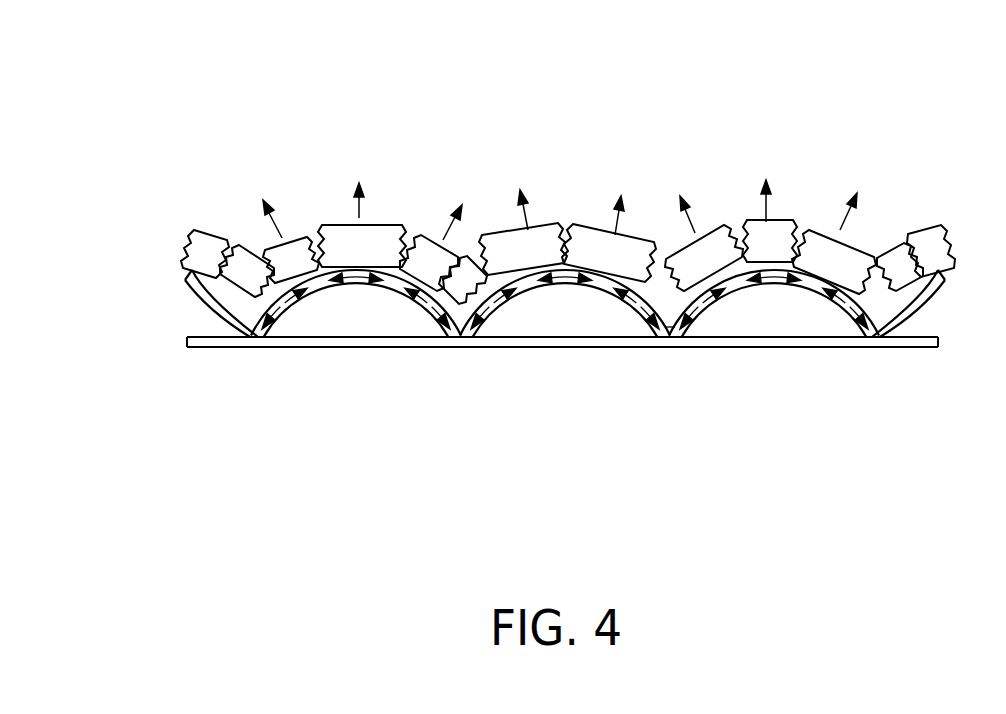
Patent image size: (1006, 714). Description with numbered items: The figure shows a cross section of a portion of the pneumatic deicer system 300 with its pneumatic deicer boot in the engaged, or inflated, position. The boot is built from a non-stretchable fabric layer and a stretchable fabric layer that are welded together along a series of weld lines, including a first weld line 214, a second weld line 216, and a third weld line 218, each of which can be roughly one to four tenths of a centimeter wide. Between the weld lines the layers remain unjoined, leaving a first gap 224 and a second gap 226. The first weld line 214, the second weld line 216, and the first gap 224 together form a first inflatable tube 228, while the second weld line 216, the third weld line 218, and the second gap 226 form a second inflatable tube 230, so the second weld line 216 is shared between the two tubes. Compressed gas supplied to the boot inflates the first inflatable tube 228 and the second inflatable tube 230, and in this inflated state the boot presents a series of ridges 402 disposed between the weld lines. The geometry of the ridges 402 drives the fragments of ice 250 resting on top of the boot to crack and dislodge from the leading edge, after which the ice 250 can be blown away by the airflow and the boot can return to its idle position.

The pneumatic deicer system 300 is at (600, 132).
The ice 250 is at (630, 232).
The ridges 402 is at (765, 268).
The first gap 224 is at (548, 326).
The second gap 226 is at (743, 330).
The third weld line 218 is at (461, 338).
The second weld line 216 is at (670, 335).
The first weld line 214 is at (878, 338).
The second inflatable tube 230 is at (577, 343).
The first inflatable tube 228 is at (775, 343).